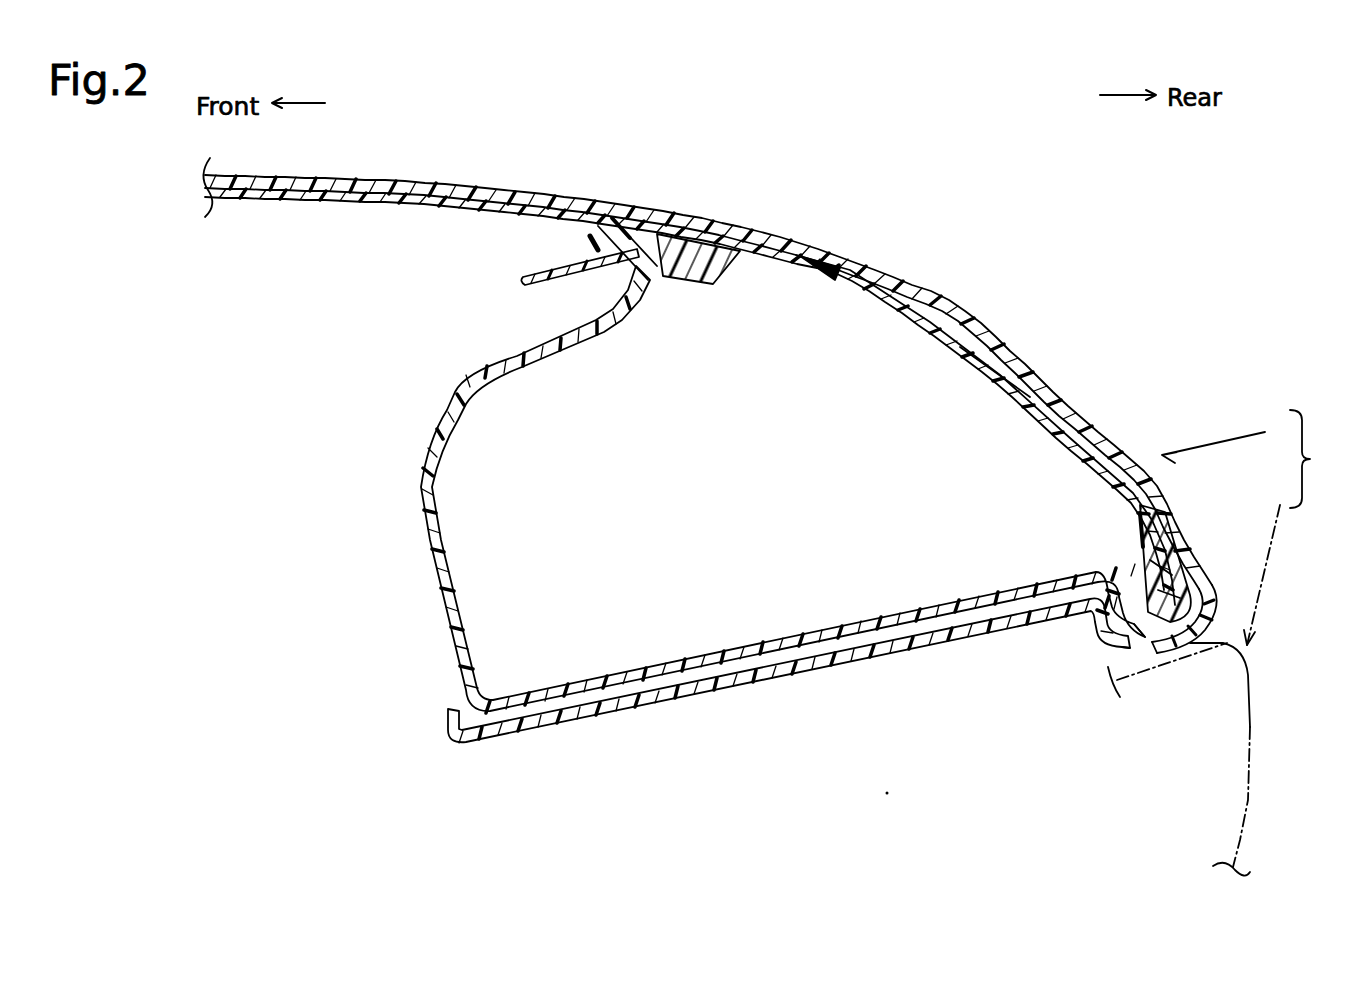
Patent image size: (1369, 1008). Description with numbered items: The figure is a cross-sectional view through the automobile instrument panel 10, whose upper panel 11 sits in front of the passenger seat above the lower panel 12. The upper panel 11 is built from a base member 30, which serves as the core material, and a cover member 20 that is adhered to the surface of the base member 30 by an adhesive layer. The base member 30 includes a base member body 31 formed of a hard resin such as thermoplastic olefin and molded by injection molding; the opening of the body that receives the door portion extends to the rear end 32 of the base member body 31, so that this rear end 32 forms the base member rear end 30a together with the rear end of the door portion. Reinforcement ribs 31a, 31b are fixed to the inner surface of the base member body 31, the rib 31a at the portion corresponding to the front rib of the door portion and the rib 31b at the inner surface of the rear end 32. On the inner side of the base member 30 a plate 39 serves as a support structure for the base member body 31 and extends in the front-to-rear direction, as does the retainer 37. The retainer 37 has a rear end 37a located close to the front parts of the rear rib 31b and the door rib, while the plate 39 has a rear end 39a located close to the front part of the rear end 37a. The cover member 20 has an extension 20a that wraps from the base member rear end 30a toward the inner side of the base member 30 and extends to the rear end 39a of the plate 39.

The instrument panel 10 is at (1315, 459).
The upper panel 11 is at (1229, 442).
The lower panel 12 is at (1270, 562).
The cover member 20 is at (960, 338).
The extension 20a is at (1152, 654).
The base member 30 is at (779, 517).
The base member rear end 30a is at (1232, 759).
The base member body 31 is at (378, 203).
The reinforcement rib 31a is at (691, 285).
The reinforcement rib 31b is at (1143, 552).
The rear end 32 is at (1190, 645).
The retainer 37 is at (426, 629).
The rear end 37a is at (1170, 645).
The plate 39 is at (746, 692).
The rear end 39a is at (1103, 634).